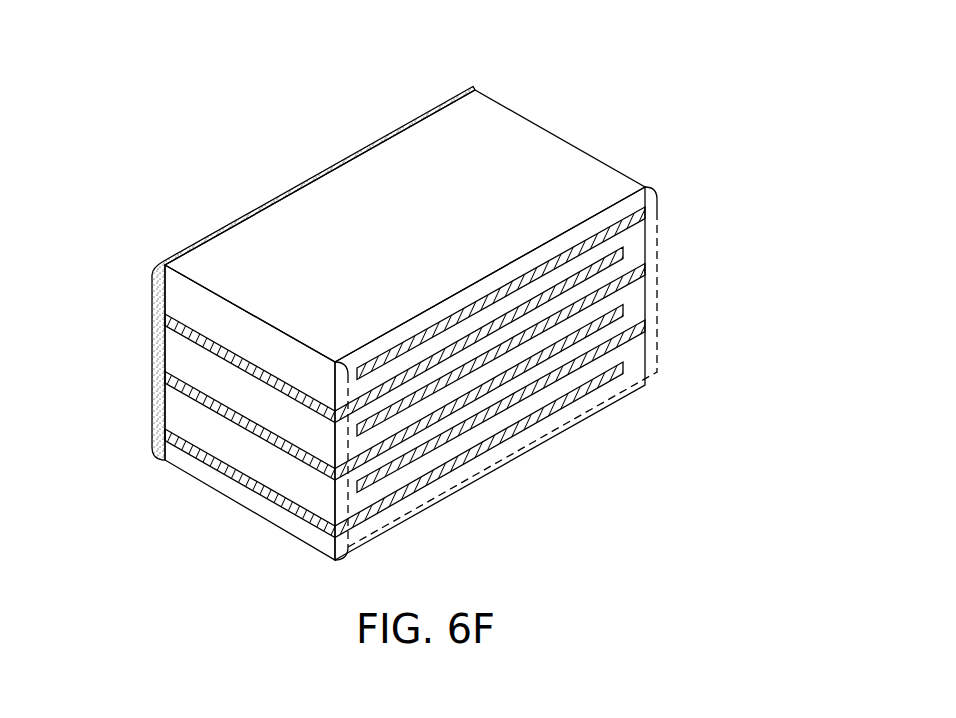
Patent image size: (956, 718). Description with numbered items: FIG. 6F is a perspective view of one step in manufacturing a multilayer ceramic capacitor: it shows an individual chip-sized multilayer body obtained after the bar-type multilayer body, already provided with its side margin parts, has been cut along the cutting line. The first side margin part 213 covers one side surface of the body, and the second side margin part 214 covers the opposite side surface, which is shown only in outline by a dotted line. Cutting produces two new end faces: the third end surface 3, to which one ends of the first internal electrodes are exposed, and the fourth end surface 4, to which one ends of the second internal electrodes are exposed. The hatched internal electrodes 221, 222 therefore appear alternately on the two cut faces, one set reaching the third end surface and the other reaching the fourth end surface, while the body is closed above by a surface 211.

The third end surface 3 is at (182, 517).
The fourth end surface 4 is at (642, 137).
The first surface 211 is at (522, 137).
The first side margin part 213 is at (152, 268).
The second side margin part 214 is at (457, 477).
The first internal electrode 221 is at (283, 500).
The second internal electrode 222 is at (634, 334).